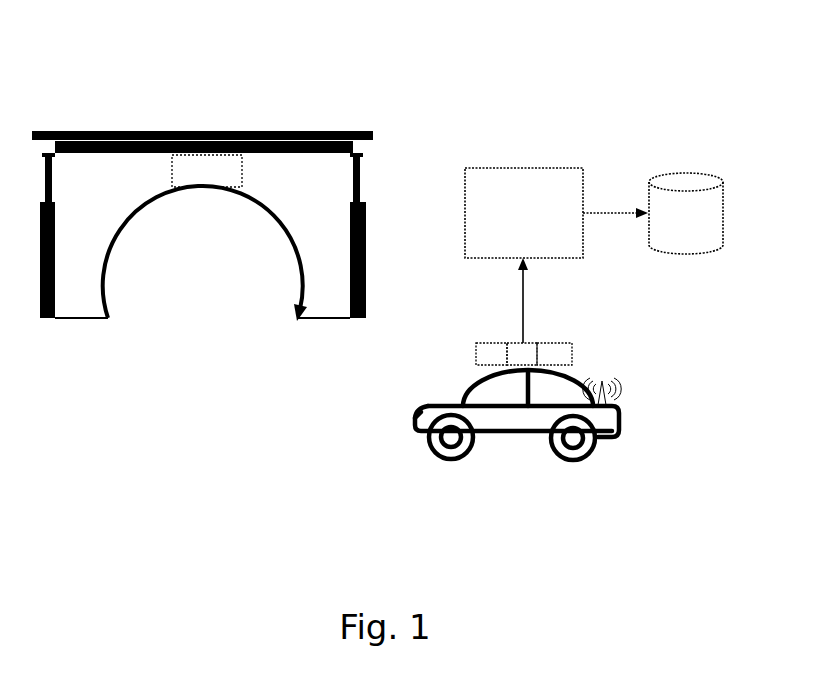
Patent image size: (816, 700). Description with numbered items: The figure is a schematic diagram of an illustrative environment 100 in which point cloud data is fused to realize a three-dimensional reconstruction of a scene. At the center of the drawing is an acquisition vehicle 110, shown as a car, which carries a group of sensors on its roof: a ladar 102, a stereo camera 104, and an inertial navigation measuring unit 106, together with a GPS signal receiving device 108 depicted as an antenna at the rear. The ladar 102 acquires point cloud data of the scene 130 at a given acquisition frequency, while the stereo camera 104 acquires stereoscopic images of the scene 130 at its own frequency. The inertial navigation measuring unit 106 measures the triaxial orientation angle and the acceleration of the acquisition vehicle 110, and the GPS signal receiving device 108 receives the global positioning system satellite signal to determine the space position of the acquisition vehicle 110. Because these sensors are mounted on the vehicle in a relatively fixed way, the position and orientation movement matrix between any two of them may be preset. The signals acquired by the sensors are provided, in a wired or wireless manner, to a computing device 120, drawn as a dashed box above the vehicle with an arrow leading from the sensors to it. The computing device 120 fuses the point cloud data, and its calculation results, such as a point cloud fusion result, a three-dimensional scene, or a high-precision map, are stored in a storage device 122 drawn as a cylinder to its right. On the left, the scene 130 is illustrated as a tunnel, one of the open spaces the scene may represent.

The illustrative environment 100 is at (449, 54).
The ladar 102 is at (485, 343).
The stereo camera 104 is at (533, 343).
The inertial navigation measuring unit 106 is at (569, 343).
The GPS signal receiving device 108 is at (614, 376).
The acquisition vehicle 110 is at (619, 408).
The computing device 120 is at (555, 167).
The storage device 122 is at (705, 177).
The scene 130 is at (207, 131).